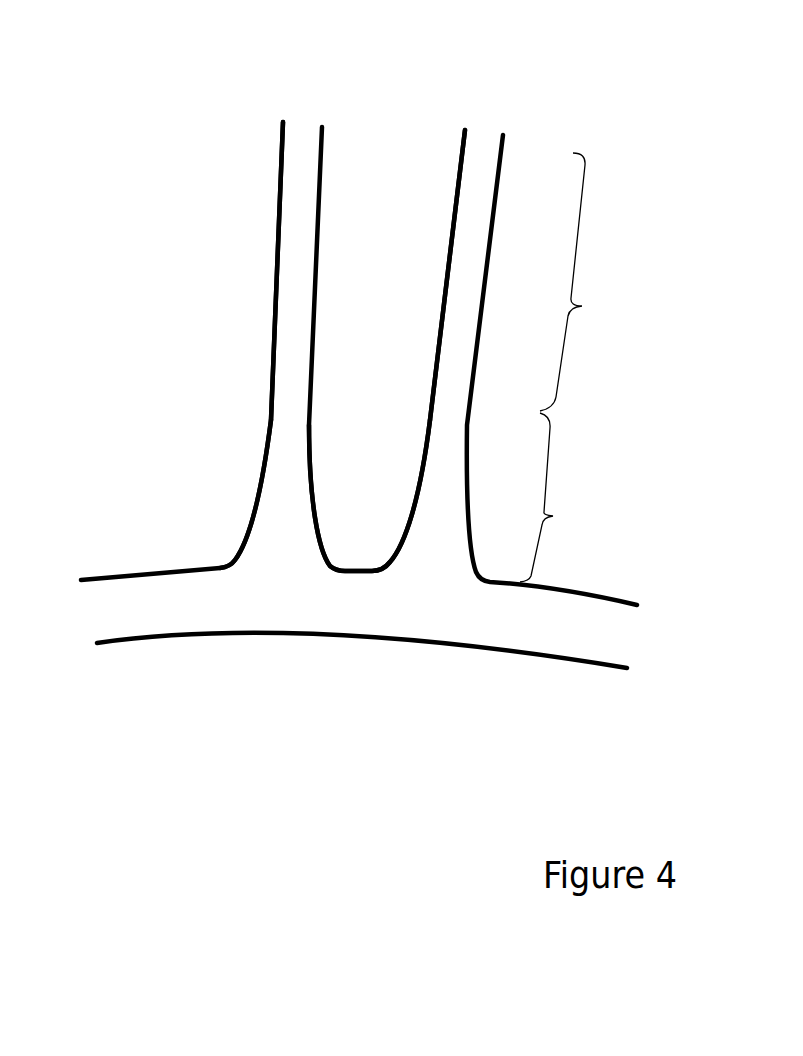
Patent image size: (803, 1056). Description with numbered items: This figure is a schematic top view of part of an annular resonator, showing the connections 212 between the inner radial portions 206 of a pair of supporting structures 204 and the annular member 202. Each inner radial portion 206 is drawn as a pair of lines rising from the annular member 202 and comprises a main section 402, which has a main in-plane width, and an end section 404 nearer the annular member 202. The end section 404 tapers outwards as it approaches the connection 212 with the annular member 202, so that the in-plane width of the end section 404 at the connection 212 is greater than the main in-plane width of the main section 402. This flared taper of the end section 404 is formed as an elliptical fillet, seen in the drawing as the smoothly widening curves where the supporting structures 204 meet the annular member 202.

The supporting structures 204 is at (438, 113).
The inner radial portion 206 is at (296, 369).
The connection 212 is at (235, 539).
The annular member 202 is at (487, 622).
The main section 402 is at (587, 281).
The end section 404 is at (572, 502).